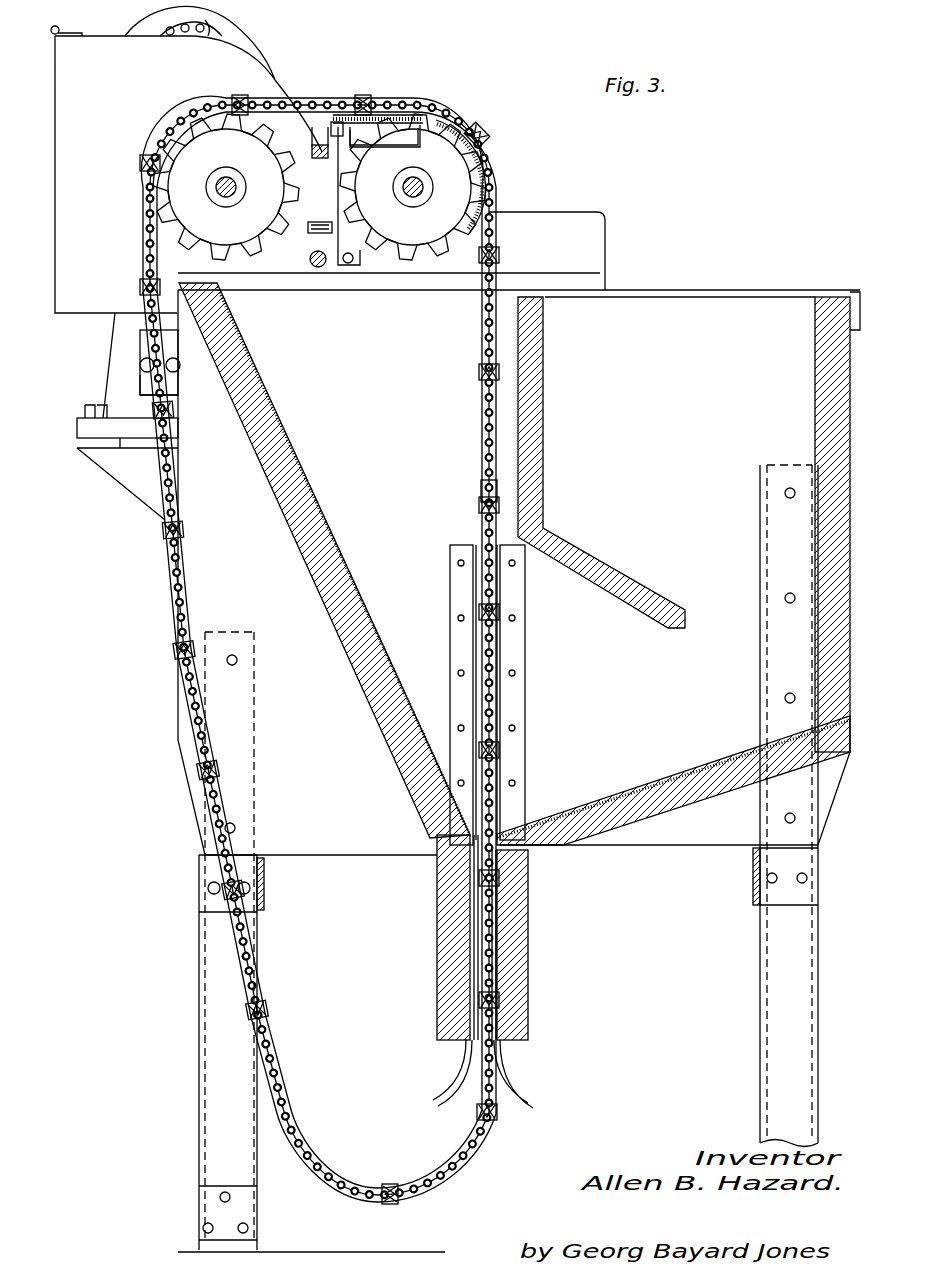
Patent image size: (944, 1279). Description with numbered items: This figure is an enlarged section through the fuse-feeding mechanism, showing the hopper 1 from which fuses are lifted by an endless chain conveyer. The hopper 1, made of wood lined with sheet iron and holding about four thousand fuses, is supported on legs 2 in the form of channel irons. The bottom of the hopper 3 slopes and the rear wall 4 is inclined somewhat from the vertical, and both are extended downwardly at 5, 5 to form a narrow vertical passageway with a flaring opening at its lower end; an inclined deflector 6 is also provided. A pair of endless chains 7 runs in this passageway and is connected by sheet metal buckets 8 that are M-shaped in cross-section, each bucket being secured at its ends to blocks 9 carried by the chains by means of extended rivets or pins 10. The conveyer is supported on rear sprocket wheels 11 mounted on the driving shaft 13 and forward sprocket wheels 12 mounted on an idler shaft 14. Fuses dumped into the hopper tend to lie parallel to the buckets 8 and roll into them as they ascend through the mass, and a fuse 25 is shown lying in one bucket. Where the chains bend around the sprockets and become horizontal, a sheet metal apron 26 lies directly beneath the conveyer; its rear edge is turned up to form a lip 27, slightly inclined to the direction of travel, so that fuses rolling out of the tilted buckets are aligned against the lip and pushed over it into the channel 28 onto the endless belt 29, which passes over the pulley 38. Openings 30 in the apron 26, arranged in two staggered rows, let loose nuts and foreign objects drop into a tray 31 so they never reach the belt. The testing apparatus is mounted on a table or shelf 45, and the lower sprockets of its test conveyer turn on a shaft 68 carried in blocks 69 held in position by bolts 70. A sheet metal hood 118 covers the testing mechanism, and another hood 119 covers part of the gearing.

The hopper 1 is at (712, 274).
The legs 2 is at (252, 1152).
The bottom of the hopper 3 is at (657, 782).
The rear wall 4 is at (318, 498).
The downward extensions of bottom and rear walls 5 is at (440, 950).
The inclined deflector 6 is at (615, 578).
The endless chains 7 is at (480, 408).
The buckets 8 is at (484, 130).
The blocks 9 is at (478, 488).
The extended rivets or pins 10 is at (472, 610).
The rear sprocket wheels 11 is at (178, 108).
The forward sprocket wheels 12 is at (455, 172).
The driving shaft 13 is at (234, 196).
The idler shaft 14 is at (425, 192).
The fuse 25 is at (482, 370).
The sheet metal apron 26 is at (447, 122).
The lip 27 is at (337, 122).
The channel 28 is at (313, 130).
The endless belt 29 is at (320, 145).
The openings 30 is at (398, 108).
The tray 31 is at (388, 150).
The pulley 38 is at (308, 248).
The table or shelf 45 is at (78, 424).
The shaft 68 is at (178, 370).
The blocks 69 is at (146, 386).
The bolts 70 is at (140, 366).
The sheet metal hood 118 is at (152, 12).
The hood 119 is at (68, 72).